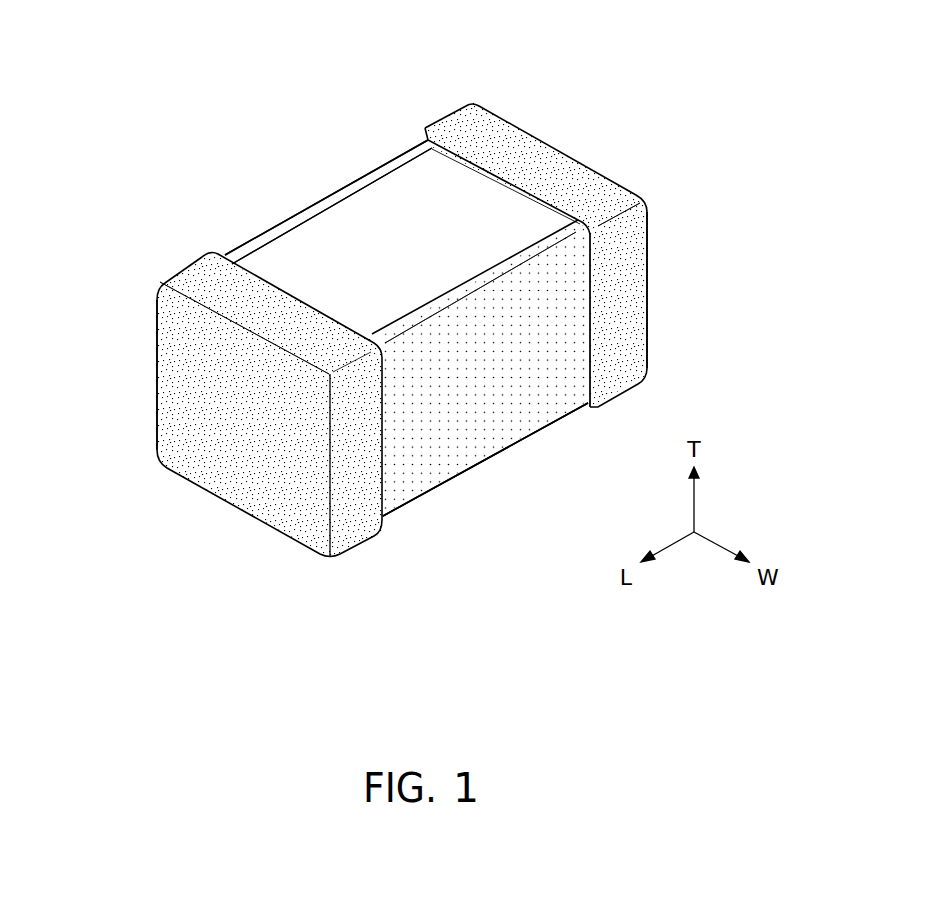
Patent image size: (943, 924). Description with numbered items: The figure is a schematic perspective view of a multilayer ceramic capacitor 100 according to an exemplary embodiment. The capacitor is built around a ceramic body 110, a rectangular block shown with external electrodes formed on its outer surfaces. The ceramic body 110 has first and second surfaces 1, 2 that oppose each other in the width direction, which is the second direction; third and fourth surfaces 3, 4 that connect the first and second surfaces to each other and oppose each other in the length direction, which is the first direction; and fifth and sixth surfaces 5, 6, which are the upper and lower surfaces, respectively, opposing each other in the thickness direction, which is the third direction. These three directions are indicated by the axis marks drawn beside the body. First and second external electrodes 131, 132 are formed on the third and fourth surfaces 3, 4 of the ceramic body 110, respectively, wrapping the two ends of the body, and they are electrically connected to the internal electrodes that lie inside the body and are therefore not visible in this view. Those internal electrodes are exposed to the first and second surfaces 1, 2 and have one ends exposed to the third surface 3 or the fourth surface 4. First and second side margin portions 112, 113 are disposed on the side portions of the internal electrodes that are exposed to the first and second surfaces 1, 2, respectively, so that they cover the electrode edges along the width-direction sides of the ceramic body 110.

The multilayer ceramic capacitor 100 is at (196, 62).
The ceramic body 110 is at (362, 208).
The first side margin portion 112 is at (310, 207).
The second side margin portion 113 is at (465, 458).
The first surface 1 is at (287, 265).
The second surface 2 is at (562, 334).
The third surface 3 is at (193, 372).
The fourth surface 4 is at (591, 197).
The fifth surface 5 is at (422, 190).
The sixth surface 6 is at (496, 414).
The first external electrode 131 is at (196, 268).
The second external electrode 132 is at (528, 143).